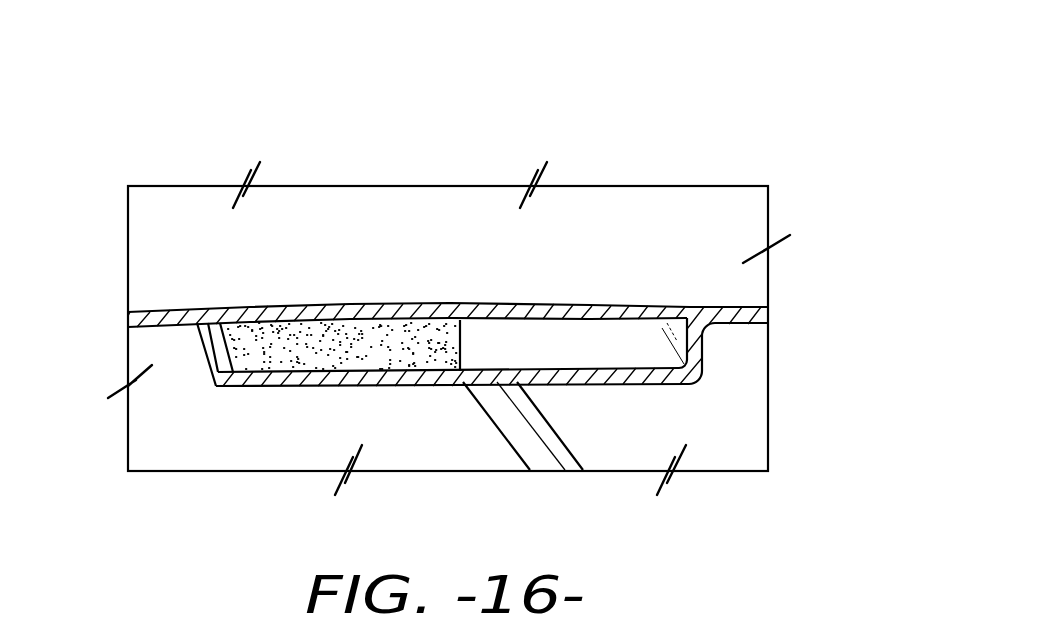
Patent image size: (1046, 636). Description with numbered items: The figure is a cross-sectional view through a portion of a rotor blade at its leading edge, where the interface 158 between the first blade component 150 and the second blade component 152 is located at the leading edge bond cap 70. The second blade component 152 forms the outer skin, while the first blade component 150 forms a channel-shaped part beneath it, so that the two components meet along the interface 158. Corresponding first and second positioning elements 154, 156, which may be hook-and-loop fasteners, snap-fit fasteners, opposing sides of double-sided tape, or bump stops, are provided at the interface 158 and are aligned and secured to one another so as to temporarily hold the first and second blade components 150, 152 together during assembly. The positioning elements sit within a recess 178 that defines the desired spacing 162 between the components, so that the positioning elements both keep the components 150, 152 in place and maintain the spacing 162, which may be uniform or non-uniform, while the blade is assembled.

The first blade component 150 is at (745, 253).
The leading edge bond cap 70 is at (720, 302).
The second blade component 152 is at (354, 300).
The first positioning element 154 is at (416, 429).
The second positioning element 156 is at (277, 340).
The interface 158 is at (603, 148).
The desired spacing 162 is at (518, 350).
The recess 178 is at (590, 347).